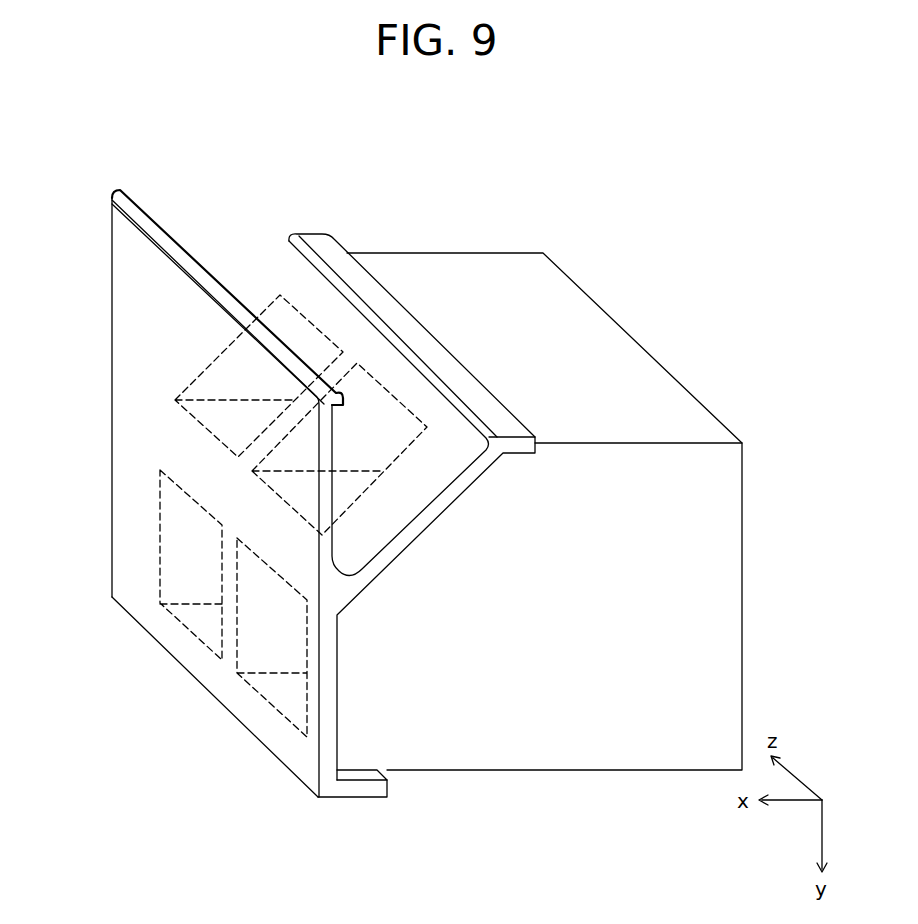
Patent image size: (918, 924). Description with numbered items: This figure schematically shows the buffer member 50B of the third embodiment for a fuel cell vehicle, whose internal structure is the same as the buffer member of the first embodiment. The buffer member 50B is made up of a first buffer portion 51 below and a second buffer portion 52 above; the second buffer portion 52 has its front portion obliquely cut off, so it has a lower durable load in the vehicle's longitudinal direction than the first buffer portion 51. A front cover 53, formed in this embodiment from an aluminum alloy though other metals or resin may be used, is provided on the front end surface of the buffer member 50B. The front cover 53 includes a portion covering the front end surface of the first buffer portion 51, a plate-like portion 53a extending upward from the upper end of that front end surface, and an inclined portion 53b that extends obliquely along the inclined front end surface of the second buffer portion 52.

The buffer member 50B is at (707, 182).
The first buffer portion 51 is at (98, 413).
The second buffer portion 52 is at (98, 245).
The front cover 53 is at (165, 223).
The plate-like portion 53a is at (333, 540).
The inclined portion 53b is at (418, 520).